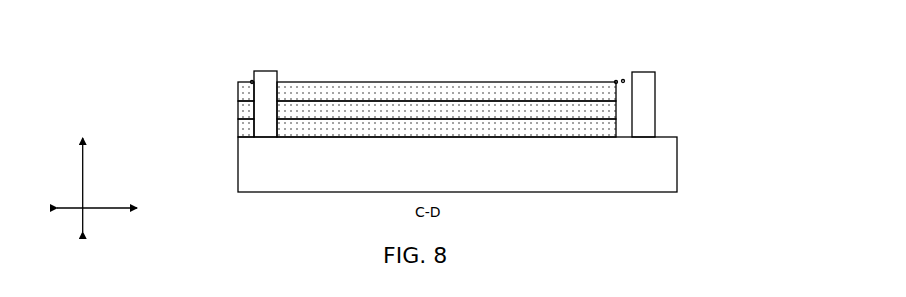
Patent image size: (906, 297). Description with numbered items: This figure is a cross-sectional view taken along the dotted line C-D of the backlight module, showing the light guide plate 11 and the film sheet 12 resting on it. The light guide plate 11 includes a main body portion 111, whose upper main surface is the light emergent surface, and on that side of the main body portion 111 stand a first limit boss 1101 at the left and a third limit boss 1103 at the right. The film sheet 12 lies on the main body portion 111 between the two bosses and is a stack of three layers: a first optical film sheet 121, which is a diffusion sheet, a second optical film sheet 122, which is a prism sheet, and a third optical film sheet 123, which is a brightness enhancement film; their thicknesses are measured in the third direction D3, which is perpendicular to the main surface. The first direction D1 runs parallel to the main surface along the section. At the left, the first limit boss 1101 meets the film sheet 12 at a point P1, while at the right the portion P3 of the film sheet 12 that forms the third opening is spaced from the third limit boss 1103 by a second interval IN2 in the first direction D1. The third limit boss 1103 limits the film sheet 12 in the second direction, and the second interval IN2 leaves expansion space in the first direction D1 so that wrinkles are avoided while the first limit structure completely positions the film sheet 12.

The light guide plate 11 is at (505, 126).
The main body portion 111 is at (586, 160).
The first limit boss 1101 is at (270, 80).
The third limit boss 1103 is at (643, 80).
The film sheet 12 is at (147, 68).
The first optical film sheet 121 is at (238, 125).
The second optical film sheet 122 is at (238, 105).
The third optical film sheet 123 is at (238, 88).
The first point P1 is at (251, 80).
The portion of the film sheet that forms the third opening P3 is at (614, 81).
The second interval IN2 is at (623, 79).
The first direction D1 is at (112, 210).
The third direction D3 is at (84, 175).